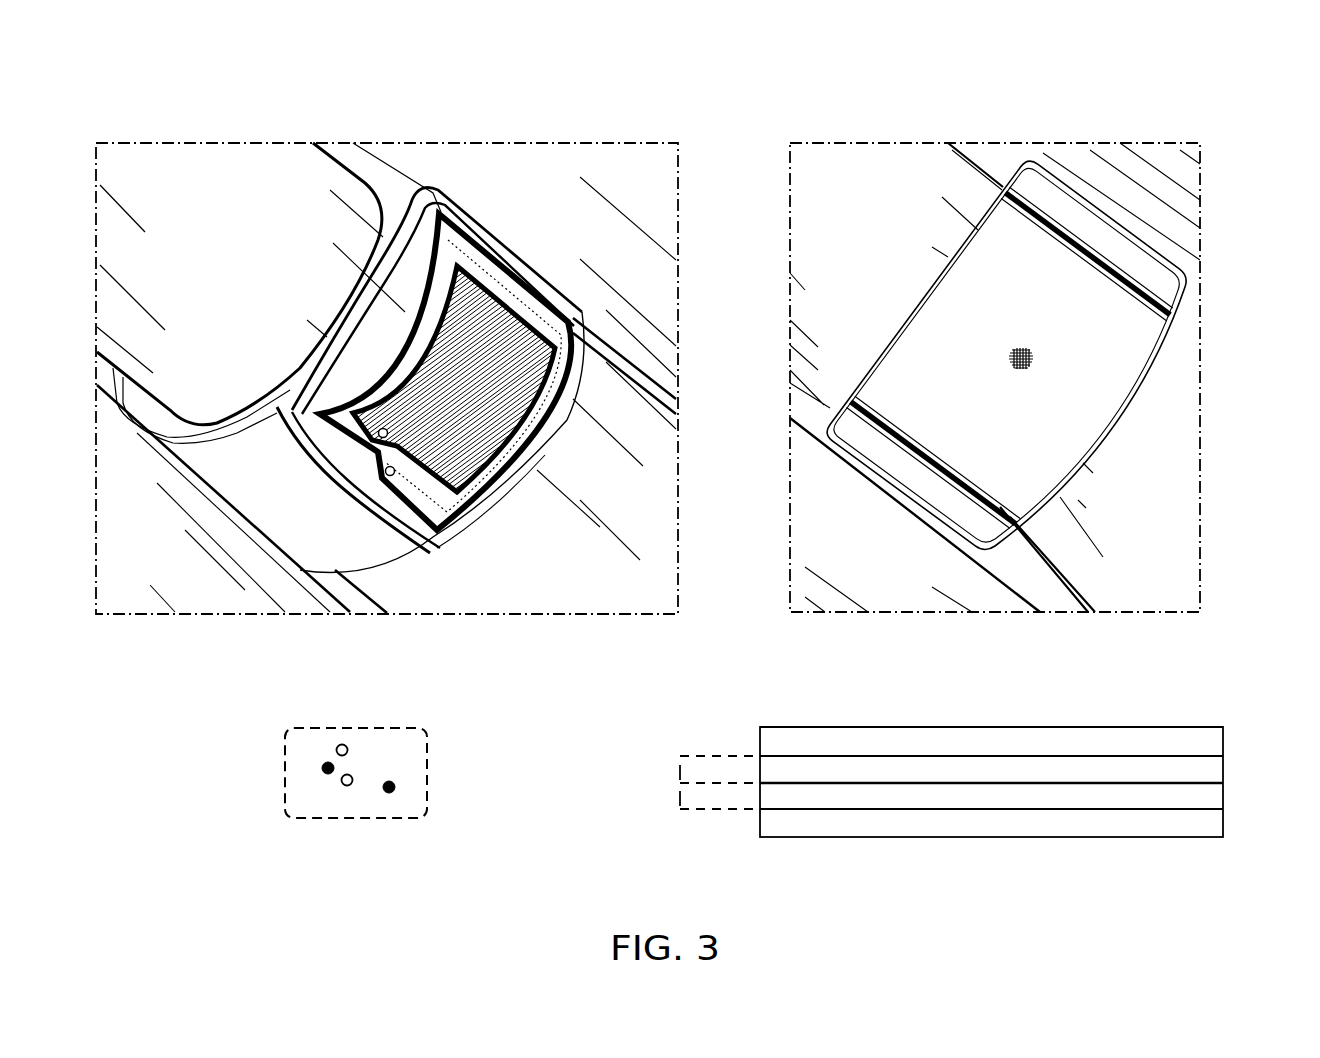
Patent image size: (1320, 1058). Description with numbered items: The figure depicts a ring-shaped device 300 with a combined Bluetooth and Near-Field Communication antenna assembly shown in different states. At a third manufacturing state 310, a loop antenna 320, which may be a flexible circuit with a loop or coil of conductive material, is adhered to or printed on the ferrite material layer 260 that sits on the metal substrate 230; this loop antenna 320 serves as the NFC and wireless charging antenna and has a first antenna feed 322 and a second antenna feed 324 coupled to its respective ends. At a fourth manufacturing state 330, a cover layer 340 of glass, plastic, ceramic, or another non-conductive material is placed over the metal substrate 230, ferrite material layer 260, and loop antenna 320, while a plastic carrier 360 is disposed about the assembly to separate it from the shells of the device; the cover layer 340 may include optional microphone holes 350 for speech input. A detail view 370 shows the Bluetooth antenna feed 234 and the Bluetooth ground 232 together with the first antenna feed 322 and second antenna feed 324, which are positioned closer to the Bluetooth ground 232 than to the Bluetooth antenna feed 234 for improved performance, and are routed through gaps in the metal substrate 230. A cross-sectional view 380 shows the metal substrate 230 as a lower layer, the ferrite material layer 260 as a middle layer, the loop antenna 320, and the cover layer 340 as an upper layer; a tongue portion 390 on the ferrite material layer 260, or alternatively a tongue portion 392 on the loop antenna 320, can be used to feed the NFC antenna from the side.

The ring-shaped device 300 is at (1226, 88).
The third manufacturing state 310 is at (387, 122).
The loop antenna 320 is at (407, 320).
The first antenna feed 322 is at (379, 436).
The second antenna feed 324 is at (385, 475).
The fourth manufacturing state 330 is at (1014, 116).
The cover layer 340 is at (952, 296).
The microphone holes 350 is at (1010, 351).
The plastic carrier 360 is at (1096, 272).
The detail view 370 is at (481, 692).
The cross-sectional view 380 is at (1204, 683).
The tongue portion 390 is at (680, 794).
The tongue portion 392 is at (680, 768).
The Bluetooth ground 232 is at (324, 773).
The Bluetooth antenna feed 234 is at (394, 785).
The ferrite material layer 260 is at (1223, 797).
The metal substrate 230 is at (1223, 825).